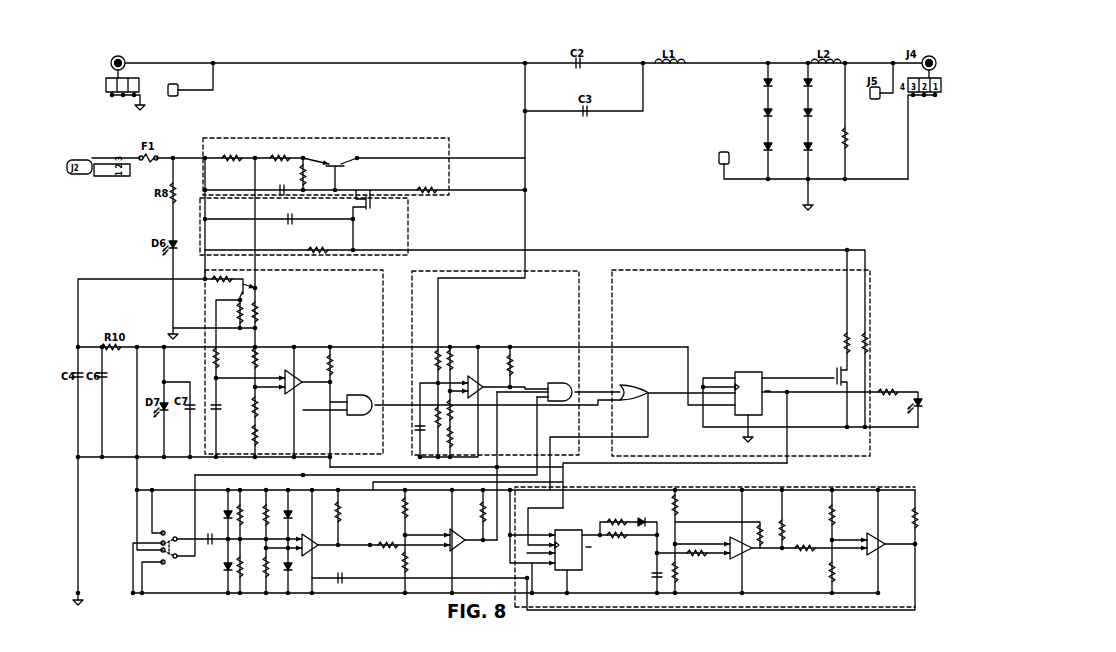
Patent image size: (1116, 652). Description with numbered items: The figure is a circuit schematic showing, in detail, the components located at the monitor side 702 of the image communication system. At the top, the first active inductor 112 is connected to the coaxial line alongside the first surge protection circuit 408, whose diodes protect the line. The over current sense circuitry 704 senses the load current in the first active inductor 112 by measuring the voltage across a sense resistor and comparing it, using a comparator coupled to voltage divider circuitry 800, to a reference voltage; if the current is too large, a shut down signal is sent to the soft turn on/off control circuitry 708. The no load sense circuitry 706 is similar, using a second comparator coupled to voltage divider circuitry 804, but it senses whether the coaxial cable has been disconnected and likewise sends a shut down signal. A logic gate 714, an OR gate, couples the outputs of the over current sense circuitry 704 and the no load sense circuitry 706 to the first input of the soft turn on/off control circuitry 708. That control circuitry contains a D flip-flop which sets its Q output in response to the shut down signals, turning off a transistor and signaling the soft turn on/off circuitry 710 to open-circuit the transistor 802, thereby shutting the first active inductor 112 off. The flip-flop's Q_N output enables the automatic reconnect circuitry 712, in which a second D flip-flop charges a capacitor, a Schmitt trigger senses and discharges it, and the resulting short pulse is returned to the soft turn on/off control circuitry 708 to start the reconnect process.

The monitor side 702 is at (311, 80).
The first active inductor 112 is at (365, 163).
The soft turn on/off circuitry 710 is at (360, 226).
The transistor 802 is at (363, 207).
The over current sense circuitry 704 is at (412, 312).
The voltage divider circuitry 800 is at (271, 370).
The no load sense circuitry 706 is at (508, 365).
The voltage divider circuitry 804 is at (471, 370).
The soft turn on/off control circuitry 708 is at (744, 369).
The logic gate 714 is at (632, 395).
The automatic reconnect circuitry 712 is at (535, 539).
The first surge protection circuit 408 is at (763, 97).